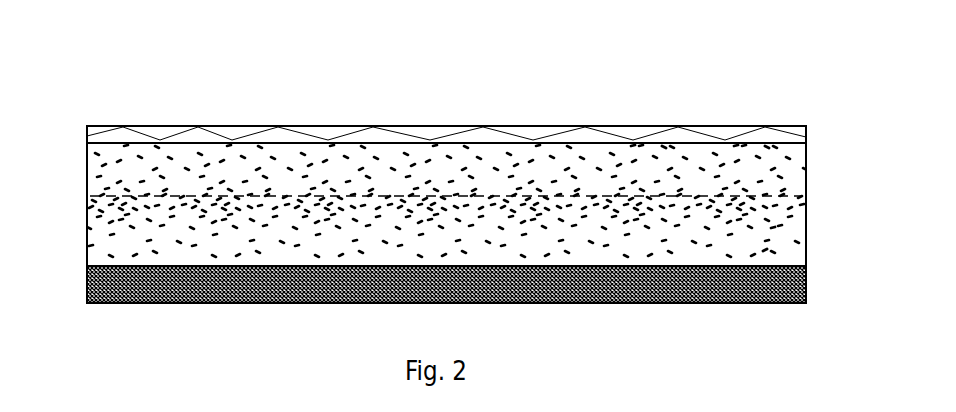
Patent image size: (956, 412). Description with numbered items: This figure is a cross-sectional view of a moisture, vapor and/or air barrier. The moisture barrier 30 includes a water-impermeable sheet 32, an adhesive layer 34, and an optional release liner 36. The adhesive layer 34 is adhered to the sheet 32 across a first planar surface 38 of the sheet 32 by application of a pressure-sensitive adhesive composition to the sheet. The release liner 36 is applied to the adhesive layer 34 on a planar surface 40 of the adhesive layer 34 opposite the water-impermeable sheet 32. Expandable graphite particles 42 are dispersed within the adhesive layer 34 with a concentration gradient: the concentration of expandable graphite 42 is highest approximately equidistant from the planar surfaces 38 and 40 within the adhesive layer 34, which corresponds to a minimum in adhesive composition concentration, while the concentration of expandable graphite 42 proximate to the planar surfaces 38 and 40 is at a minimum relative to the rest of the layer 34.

The moisture barrier 30 is at (233, 91).
The water-impermeable sheet 32 is at (808, 282).
The adhesive layer 34 is at (87, 193).
The release liner 36 is at (87, 135).
The first planar surface 38 is at (682, 268).
The planar surface 40 is at (737, 143).
The expandable graphite particles 42 is at (765, 250).